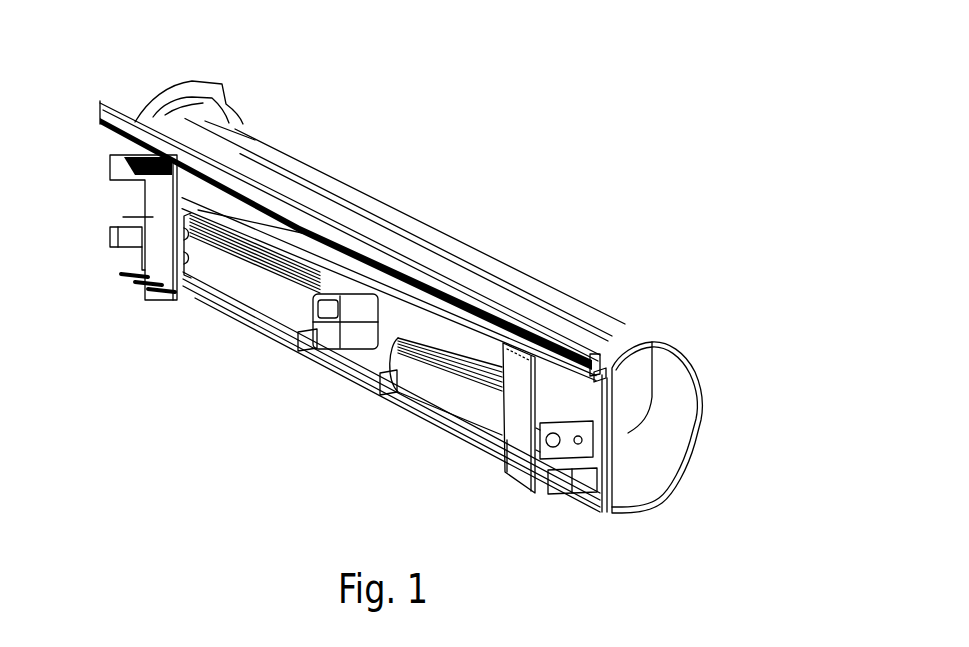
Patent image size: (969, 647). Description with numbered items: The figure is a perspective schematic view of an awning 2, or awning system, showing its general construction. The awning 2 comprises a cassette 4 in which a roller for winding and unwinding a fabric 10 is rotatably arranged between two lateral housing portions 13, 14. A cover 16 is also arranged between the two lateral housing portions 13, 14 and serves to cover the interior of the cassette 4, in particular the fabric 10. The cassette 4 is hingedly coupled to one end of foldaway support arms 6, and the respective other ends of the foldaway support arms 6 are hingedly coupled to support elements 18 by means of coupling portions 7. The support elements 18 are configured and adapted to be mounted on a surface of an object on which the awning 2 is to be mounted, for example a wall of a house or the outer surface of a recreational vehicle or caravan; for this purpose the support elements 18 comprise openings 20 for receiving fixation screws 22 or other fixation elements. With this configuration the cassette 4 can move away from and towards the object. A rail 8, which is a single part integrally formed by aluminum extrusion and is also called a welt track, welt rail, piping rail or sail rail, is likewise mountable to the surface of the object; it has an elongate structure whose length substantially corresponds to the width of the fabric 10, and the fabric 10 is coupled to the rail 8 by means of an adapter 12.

The awning 2 is at (690, 174).
The cassette 4 is at (486, 190).
The foldaway support arms 6 is at (255, 295).
The coupling portions 7 is at (566, 472).
The rail 8 is at (96, 118).
The fabric 10 is at (602, 341).
The adapter 12 is at (601, 379).
The lateral housing portion 13 is at (685, 442).
The lateral housing portion 14 is at (203, 58).
The cover 16 is at (540, 292).
The support elements 18 is at (153, 217).
The openings 20 is at (522, 472).
The fixation screws 22 is at (128, 278).